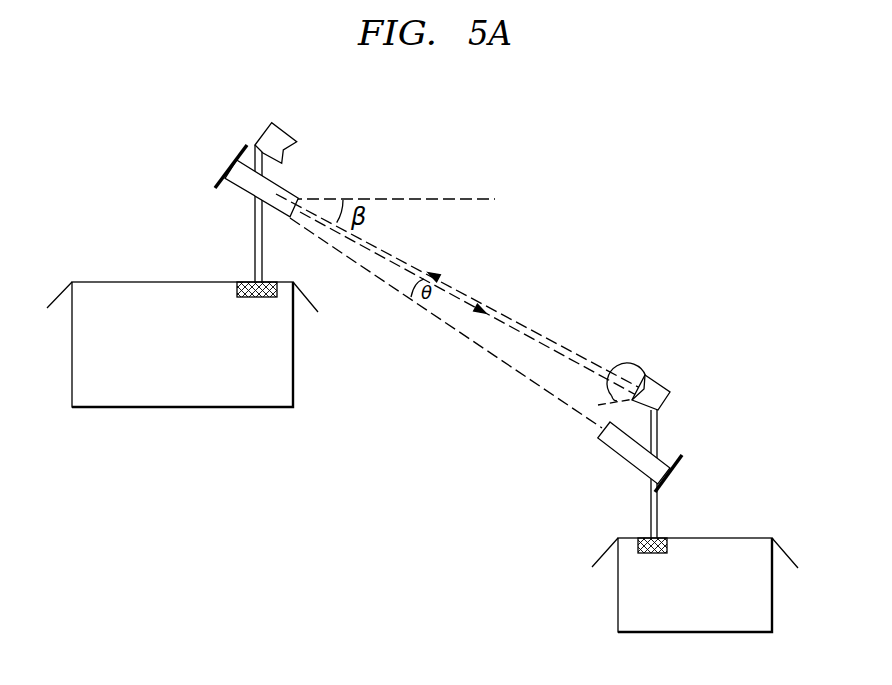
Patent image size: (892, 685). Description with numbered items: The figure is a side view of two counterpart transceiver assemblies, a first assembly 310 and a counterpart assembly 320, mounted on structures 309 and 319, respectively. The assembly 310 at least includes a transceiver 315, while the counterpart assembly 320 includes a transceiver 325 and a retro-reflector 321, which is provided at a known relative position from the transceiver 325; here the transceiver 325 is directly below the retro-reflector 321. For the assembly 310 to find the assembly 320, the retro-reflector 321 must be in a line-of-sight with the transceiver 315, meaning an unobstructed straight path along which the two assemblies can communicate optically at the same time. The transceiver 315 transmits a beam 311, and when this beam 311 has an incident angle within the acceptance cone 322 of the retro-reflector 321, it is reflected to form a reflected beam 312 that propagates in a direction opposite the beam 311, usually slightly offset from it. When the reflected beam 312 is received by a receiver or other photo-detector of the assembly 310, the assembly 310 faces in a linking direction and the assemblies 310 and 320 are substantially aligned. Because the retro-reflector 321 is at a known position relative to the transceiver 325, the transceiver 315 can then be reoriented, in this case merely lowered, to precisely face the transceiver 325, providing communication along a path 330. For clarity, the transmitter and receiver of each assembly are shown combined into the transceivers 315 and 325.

The structure 309 is at (131, 281).
The assembly 310 is at (316, 195).
The beam 311 is at (531, 332).
The reflected beam 312 is at (513, 317).
The transceiver 315 is at (237, 188).
The structure 319 is at (698, 538).
The counterpart assembly 320 is at (691, 402).
The retro-reflector 321 is at (672, 394).
The acceptance cone 322 is at (627, 358).
The transceiver 325 is at (623, 460).
The path 330 is at (487, 349).